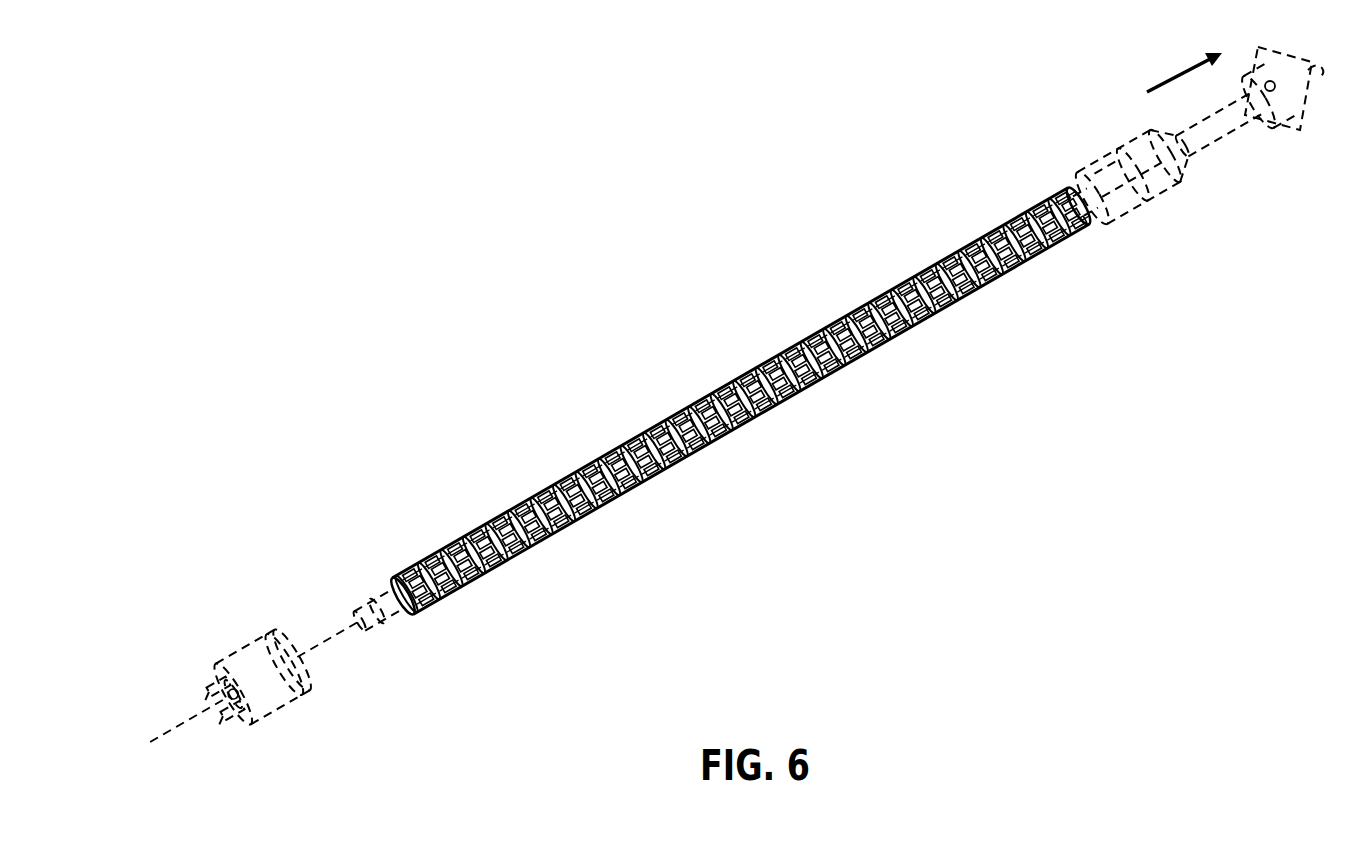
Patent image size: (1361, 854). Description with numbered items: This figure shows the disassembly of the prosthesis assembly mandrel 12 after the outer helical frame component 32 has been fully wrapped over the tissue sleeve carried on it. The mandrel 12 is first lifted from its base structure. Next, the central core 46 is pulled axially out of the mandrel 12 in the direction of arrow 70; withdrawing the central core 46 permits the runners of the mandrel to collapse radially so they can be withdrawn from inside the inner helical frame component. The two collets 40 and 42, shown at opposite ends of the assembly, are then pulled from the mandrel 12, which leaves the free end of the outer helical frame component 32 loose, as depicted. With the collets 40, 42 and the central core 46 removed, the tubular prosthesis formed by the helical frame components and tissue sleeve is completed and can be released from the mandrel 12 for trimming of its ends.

The prosthesis assembly mandrel 12 is at (512, 319).
The outer helical frame component 32 is at (857, 357).
The collet 40 is at (267, 713).
The collet 42 is at (1143, 206).
The central core 46 is at (1218, 143).
The arrow 70 is at (1173, 78).